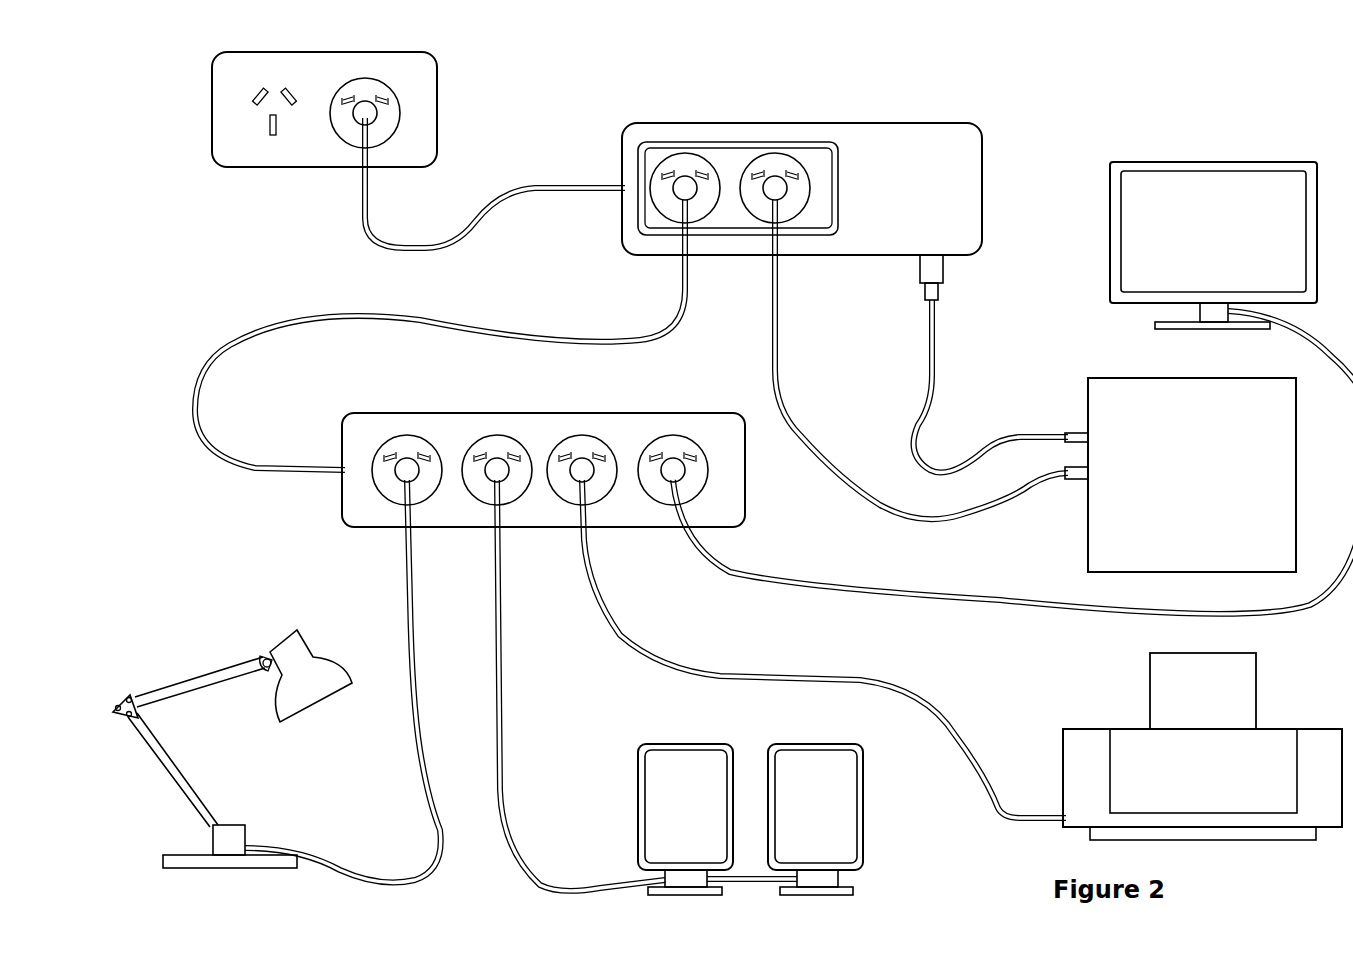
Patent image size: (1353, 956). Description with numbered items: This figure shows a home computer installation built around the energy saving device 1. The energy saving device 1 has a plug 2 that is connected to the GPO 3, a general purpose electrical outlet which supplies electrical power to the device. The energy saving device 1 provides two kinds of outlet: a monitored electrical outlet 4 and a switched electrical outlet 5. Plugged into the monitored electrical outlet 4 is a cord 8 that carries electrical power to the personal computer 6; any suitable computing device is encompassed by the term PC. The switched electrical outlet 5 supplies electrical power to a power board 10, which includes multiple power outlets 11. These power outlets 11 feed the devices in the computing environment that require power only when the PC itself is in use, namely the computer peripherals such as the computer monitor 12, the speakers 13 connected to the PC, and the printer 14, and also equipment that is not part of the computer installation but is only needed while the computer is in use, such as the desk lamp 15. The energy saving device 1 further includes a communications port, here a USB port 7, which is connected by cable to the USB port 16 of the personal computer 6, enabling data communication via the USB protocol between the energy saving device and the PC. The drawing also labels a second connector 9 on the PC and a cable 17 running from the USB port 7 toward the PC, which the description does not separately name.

The energy saving device 1 is at (917, 153).
The plug 2 is at (392, 110).
The GPO 3 is at (225, 82).
The monitored electrical outlet 4 is at (773, 163).
The switched electrical outlet 5 is at (688, 163).
The personal computer 6 is at (1118, 403).
The USB port 7 is at (940, 274).
The cord 8 is at (787, 400).
The connector on PC 9 is at (1080, 478).
The power board 10 is at (623, 522).
The power outlets 11 is at (407, 445).
The computer monitor 12 is at (1128, 180).
The speakers 13 is at (656, 808).
The printer 14 is at (1087, 757).
The desk lamp 15 is at (200, 683).
The USB port 16 is at (1080, 437).
The control cable 17 is at (922, 385).